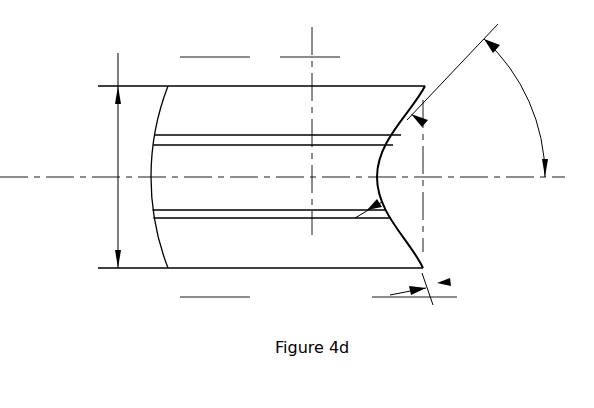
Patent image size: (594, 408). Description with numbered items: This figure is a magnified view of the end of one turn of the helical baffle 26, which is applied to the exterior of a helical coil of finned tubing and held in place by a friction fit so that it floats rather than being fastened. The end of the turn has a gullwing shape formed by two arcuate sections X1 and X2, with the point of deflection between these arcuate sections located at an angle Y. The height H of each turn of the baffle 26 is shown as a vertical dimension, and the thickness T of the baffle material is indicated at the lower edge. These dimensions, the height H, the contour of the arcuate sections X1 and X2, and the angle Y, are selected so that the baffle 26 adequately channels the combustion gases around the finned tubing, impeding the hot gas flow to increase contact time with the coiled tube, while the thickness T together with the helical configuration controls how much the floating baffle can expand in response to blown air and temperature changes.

The baffle 26 is at (347, 86).
The height H is at (118, 53).
The angle Y is at (477, 100).
The arcuate section X1 is at (428, 124).
The arcuate section X2 is at (382, 202).
The thickness T is at (437, 283).